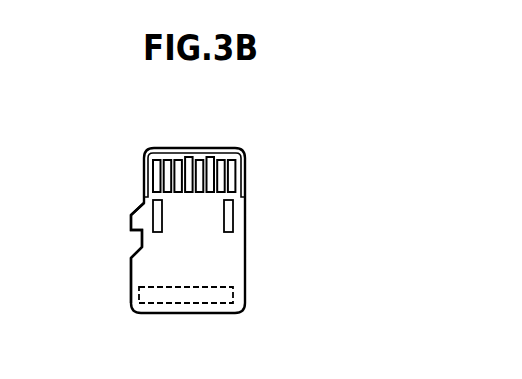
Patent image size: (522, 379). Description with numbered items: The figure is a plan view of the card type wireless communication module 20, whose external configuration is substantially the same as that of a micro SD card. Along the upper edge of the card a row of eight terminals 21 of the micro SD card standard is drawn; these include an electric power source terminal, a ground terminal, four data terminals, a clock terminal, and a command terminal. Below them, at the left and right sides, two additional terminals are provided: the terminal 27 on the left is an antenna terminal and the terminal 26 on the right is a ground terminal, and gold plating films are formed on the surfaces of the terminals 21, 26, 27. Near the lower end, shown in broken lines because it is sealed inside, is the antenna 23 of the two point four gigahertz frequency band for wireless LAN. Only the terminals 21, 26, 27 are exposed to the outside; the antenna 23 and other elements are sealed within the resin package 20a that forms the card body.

The card type wireless communication module 20 is at (255, 253).
The package 20a is at (152, 265).
The terminals 21 is at (243, 145).
The antenna 23 is at (183, 303).
The ground terminal 26 is at (233, 215).
The antenna terminal 27 is at (153, 223).